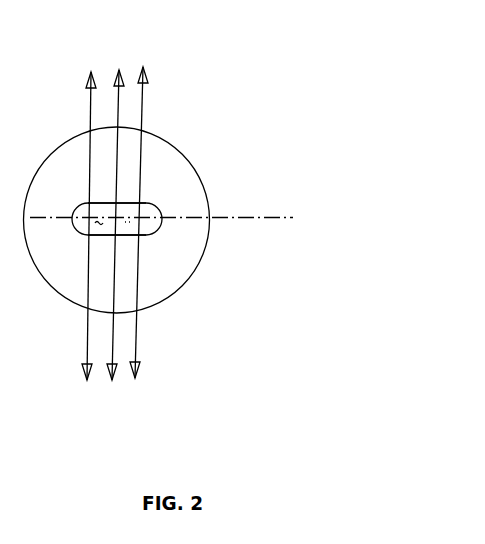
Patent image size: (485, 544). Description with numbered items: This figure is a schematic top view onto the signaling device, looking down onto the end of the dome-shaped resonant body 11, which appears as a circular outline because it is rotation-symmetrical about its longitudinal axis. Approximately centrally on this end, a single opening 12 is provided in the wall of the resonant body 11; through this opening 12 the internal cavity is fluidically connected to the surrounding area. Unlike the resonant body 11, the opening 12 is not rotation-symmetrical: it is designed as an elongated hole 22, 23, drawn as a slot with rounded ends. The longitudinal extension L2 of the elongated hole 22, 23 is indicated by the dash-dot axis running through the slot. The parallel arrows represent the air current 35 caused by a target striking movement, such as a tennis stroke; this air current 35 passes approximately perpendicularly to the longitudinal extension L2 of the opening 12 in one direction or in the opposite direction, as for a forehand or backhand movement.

The resonant body 11 is at (155, 157).
The opening 12 is at (150, 218).
The elongated hole 22 is at (194, 279).
The second edge 23 is at (155, 233).
The air current 35 is at (113, 62).
The longitudinal extension L2 is at (238, 218).